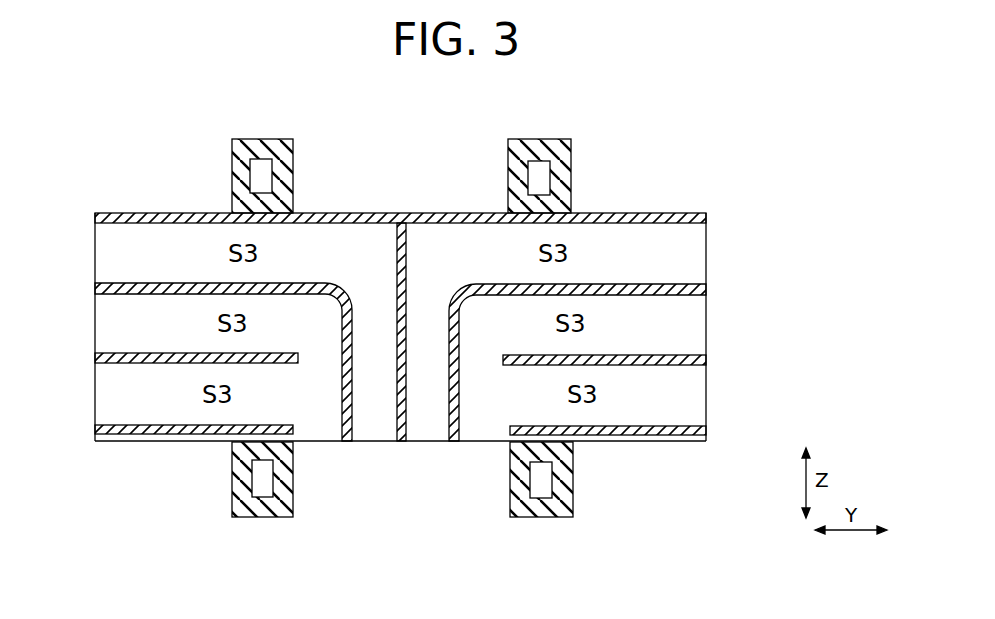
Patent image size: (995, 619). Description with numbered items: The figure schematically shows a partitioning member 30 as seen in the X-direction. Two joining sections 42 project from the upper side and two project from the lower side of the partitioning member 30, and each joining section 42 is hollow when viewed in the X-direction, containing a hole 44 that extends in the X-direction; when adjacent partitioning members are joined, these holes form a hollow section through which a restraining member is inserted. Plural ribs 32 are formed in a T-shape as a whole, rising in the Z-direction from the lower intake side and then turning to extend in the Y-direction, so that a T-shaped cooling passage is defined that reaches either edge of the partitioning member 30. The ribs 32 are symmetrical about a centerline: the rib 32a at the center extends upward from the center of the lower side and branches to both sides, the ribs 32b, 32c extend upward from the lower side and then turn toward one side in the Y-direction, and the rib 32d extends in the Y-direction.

The partitioning member 30 is at (700, 207).
The ribs 32 is at (533, 389).
The rib at the center 32a is at (397, 392).
The rib 32b is at (448, 392).
The rib 32c is at (504, 366).
The rib 32d is at (510, 428).
The joining section 42 is at (232, 151).
The hole 44 is at (256, 181).